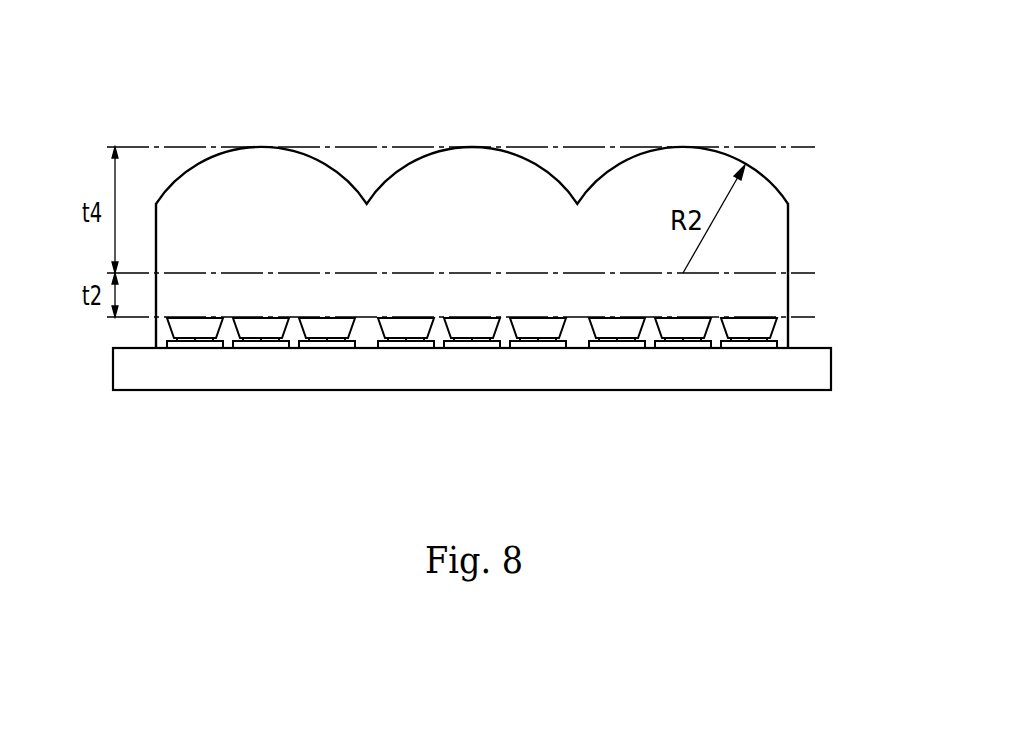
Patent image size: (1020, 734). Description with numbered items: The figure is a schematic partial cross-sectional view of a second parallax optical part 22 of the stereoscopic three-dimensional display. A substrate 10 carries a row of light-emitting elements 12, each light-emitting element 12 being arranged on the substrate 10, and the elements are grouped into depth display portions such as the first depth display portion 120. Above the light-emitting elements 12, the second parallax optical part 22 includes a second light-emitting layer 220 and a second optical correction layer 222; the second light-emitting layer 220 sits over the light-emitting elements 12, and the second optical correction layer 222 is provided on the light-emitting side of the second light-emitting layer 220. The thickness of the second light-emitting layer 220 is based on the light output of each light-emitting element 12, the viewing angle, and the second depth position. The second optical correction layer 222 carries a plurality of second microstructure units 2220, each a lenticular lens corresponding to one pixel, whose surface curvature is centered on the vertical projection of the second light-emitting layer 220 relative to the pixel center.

The substrate 10 is at (214, 378).
The light-emitting element 12 is at (172, 321).
The first depth display portion 120 is at (804, 336).
The second parallax optical part 22 is at (558, 177).
The second light-emitting layer 220 is at (778, 303).
The second optical correction layer 222 is at (526, 139).
The second microstructure unit 2220 is at (270, 168).